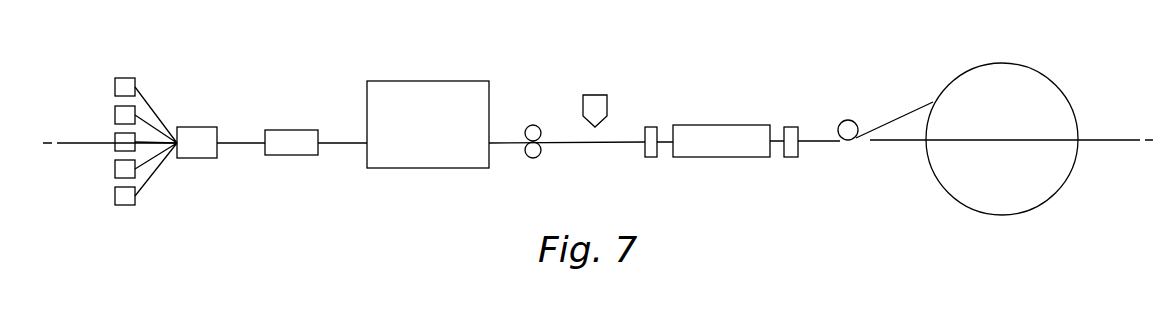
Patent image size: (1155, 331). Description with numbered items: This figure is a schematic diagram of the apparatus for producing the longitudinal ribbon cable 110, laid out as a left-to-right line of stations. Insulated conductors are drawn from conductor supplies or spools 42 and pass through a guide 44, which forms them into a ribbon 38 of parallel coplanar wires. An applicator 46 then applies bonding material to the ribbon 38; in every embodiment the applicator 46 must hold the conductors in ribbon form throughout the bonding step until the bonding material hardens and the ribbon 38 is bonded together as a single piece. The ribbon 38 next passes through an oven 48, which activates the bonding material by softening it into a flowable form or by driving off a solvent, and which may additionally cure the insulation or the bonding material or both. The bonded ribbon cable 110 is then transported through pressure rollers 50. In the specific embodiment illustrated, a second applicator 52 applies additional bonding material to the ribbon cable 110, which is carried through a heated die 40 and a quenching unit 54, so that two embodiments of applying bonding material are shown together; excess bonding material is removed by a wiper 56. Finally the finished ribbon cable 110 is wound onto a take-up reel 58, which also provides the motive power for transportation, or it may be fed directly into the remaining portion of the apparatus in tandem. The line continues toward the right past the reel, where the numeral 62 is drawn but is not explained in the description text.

The ribbon 38 is at (242, 142).
The heated die 40 is at (651, 132).
The conductor supplies or spools 42 is at (125, 88).
The guide 44 is at (197, 152).
The applicator 46 is at (293, 140).
The oven 48 is at (451, 95).
The pressure rollers 50 is at (538, 125).
The applicator 52 is at (596, 103).
The quenching unit 54 is at (727, 148).
The wiper 56 is at (792, 130).
The take-up reel 58 is at (1023, 82).
The output line 62 is at (1122, 140).
The ribbon cable 110 is at (905, 108).